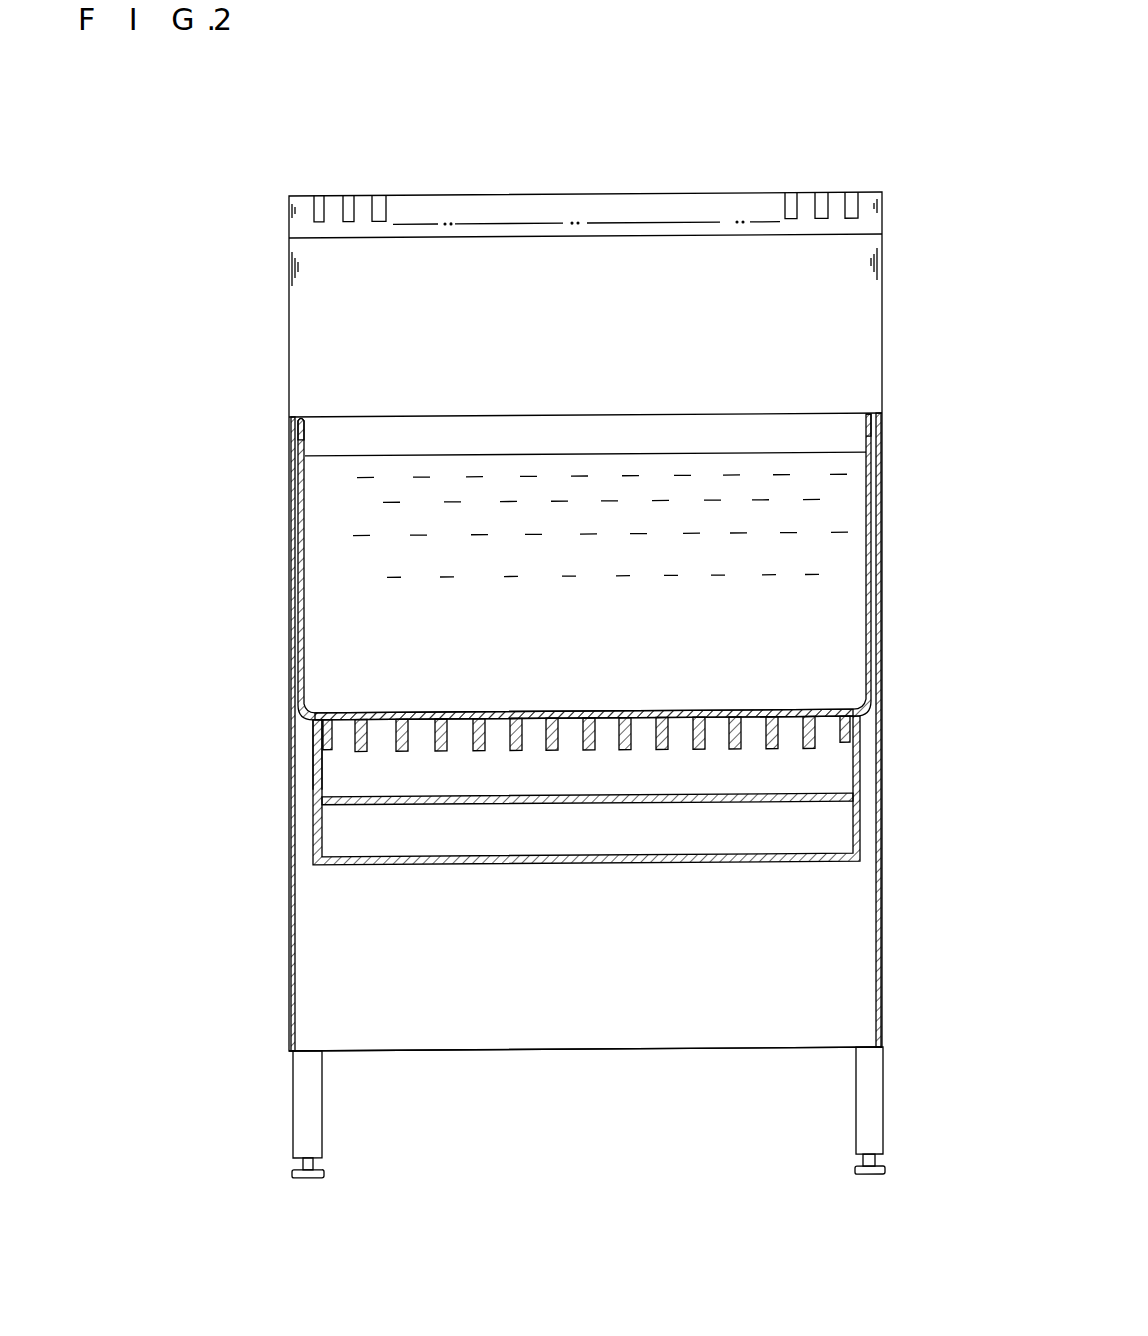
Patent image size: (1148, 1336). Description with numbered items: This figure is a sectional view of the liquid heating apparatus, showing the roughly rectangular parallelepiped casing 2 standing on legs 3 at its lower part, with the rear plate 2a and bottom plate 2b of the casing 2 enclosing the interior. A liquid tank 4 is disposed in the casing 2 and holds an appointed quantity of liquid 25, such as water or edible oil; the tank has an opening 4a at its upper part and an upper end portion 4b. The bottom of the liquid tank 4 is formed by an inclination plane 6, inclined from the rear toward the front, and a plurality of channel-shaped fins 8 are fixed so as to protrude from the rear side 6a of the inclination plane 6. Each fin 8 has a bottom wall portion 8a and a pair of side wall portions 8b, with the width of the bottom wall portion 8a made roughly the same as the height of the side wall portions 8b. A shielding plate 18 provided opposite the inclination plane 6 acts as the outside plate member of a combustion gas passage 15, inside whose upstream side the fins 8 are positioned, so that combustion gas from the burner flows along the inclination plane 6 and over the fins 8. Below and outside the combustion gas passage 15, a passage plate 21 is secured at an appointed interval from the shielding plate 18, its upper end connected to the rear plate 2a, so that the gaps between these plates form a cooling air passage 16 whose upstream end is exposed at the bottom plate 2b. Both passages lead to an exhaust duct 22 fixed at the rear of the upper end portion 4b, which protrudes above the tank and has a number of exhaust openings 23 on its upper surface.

The casing 2 is at (281, 502).
The rear plate 2a is at (857, 997).
The bottom plate 2b is at (585, 1053).
The legs 3 is at (293, 1097).
The liquid tank 4 is at (295, 589).
The opening 4a is at (305, 426).
The upper end portion 4b is at (866, 414).
The inclination plane 6 is at (781, 711).
The rear side 6a is at (822, 728).
The fins 8 is at (820, 754).
The bottom wall portion 8a is at (377, 718).
The side wall portions 8b is at (330, 752).
The combustion gas passage 15 is at (567, 772).
The cooling air passage 16 is at (575, 839).
The shielding plate 18 is at (371, 806).
The passage plate 21 is at (802, 866).
The exhaust duct 22 is at (876, 288).
The exhaust openings 23 is at (390, 206).
The liquid 25 is at (838, 478).